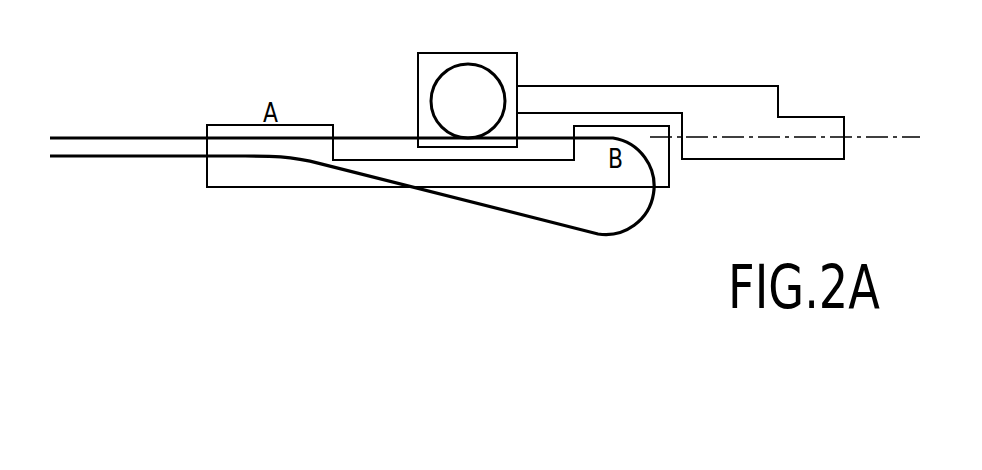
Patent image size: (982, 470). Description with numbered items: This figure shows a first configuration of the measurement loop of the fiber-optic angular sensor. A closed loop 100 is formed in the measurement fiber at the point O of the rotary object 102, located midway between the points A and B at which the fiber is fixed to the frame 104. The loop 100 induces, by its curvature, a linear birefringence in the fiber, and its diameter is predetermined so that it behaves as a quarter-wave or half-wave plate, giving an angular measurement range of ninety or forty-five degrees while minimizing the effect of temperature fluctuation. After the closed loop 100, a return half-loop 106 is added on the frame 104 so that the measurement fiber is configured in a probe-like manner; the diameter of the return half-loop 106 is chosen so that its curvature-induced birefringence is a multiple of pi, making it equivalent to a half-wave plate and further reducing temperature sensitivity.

The loop 100 is at (480, 63).
The rotary object 102 is at (745, 92).
The frame 104 is at (226, 170).
The return half-loop 106 is at (643, 222).